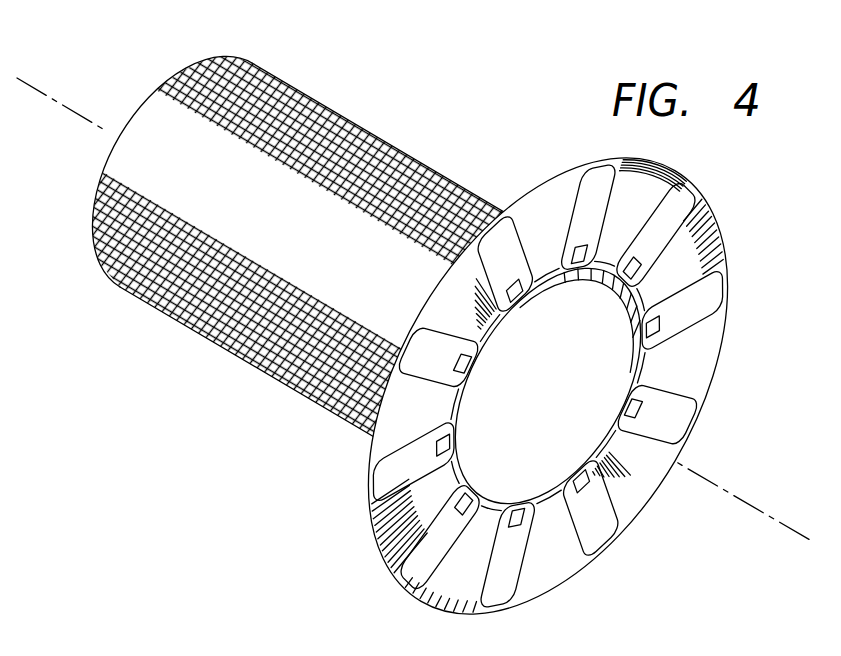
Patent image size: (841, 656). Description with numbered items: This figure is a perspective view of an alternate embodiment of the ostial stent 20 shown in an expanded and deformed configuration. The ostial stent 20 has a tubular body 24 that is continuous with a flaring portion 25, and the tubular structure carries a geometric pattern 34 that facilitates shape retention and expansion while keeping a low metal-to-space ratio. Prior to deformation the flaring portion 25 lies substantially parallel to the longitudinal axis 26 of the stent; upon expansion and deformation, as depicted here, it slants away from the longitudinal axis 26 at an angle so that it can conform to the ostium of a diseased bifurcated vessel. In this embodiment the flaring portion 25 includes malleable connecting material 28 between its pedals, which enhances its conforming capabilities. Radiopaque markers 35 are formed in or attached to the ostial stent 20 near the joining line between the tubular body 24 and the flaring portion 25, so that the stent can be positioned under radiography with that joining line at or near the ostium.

The ostial stent 20 is at (306, 92).
The tubular body 24 is at (433, 166).
The geometric pattern 34 is at (316, 372).
The flaring portion 25 is at (565, 590).
The malleable connecting material 28 is at (407, 520).
The radiopaque markers 35 is at (520, 292).
The longitudinal axis 26 is at (742, 492).